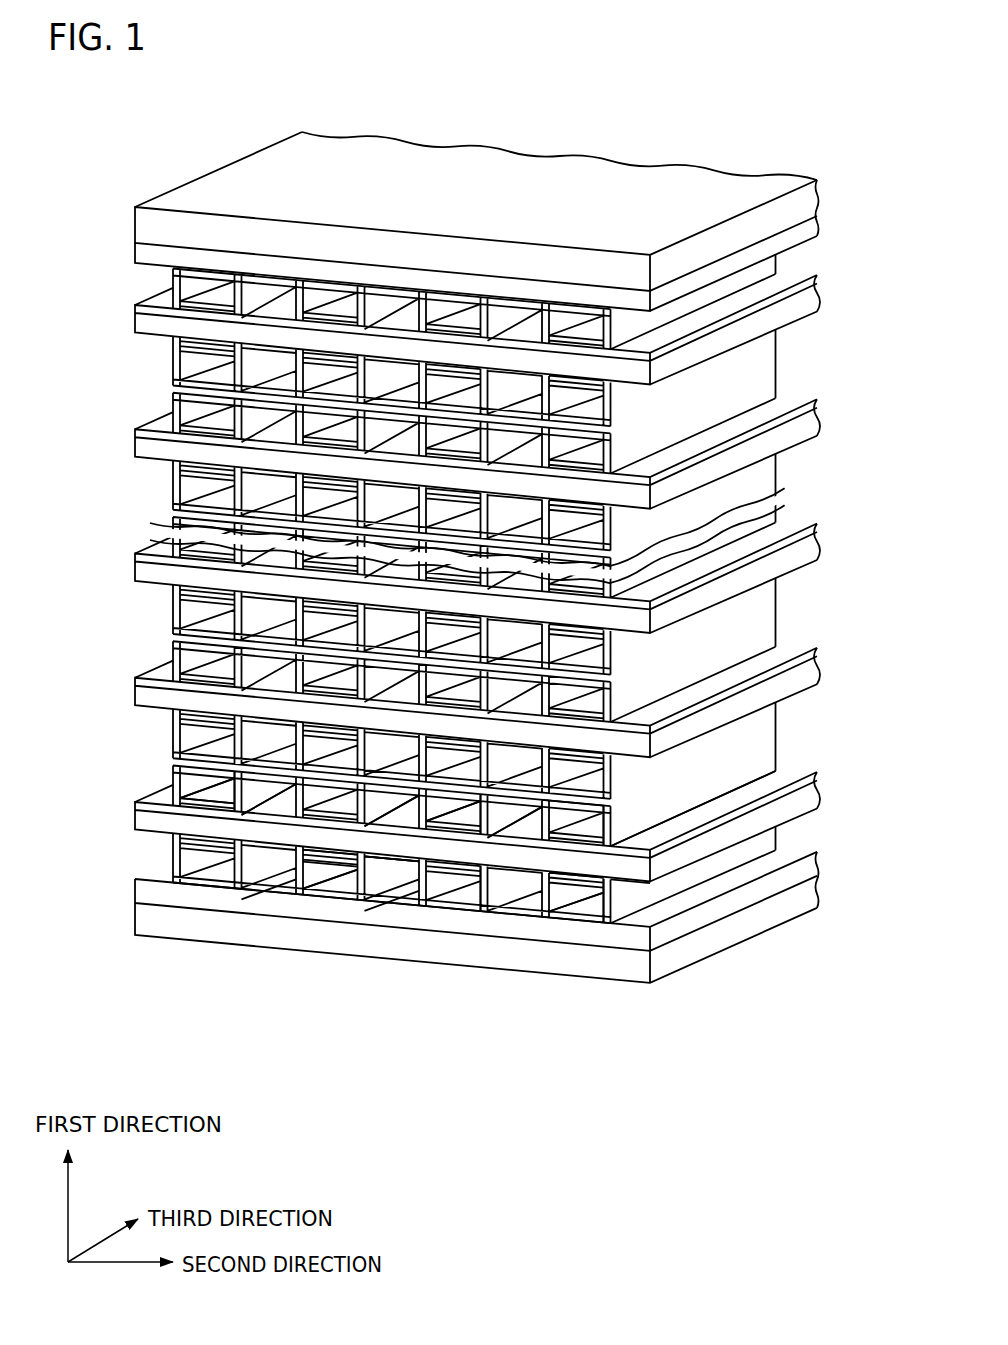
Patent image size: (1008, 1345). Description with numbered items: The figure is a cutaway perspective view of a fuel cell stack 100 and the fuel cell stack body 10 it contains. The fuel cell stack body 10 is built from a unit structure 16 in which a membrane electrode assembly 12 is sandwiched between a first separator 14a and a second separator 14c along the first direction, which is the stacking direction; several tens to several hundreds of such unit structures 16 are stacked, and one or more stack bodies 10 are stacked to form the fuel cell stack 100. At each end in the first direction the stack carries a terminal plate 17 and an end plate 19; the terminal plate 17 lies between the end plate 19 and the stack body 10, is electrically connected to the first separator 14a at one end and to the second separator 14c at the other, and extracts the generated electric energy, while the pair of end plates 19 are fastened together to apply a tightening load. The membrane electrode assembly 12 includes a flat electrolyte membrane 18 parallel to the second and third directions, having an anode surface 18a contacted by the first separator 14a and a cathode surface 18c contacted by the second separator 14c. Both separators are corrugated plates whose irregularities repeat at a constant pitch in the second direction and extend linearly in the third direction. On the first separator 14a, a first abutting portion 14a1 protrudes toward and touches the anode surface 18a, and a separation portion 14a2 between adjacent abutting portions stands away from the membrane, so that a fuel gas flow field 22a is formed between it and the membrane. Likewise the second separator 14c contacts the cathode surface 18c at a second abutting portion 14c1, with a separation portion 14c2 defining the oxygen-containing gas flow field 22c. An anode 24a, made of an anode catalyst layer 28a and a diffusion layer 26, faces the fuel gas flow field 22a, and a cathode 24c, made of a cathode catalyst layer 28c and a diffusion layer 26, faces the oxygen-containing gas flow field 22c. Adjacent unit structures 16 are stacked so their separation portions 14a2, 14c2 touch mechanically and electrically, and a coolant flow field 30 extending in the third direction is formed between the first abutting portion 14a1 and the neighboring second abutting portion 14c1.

The fuel cell stack 100 is at (166, 160).
The fuel cell stack body 10 is at (36, 830).
The membrane electrode assembly 12 is at (131, 320).
The first separator 14a is at (171, 351).
The second separator 14c is at (171, 289).
The first abutting portion 14a1 is at (403, 860).
The separation portion 14a2 is at (450, 870).
The second abutting portion 14c1 is at (672, 828).
The separation portion 14c2 is at (470, 800).
The unit structure 16 is at (74, 267).
The terminal plate 17 is at (135, 247).
The electrolyte membrane 18 is at (593, 826).
The anode surface 18a is at (598, 873).
The cathode surface 18c is at (567, 848).
The end plate 19 is at (135, 211).
The fuel gas flow field 22a is at (347, 880).
The oxygen-containing gas flow field 22c is at (443, 800).
The anode 24a is at (350, 1064).
The cathode 24c is at (245, 1014).
The diffusion layer 26 is at (197, 803).
The anode catalyst layer 28a is at (320, 848).
The cathode catalyst layer 28c is at (220, 812).
The coolant flow field 30 is at (279, 789).